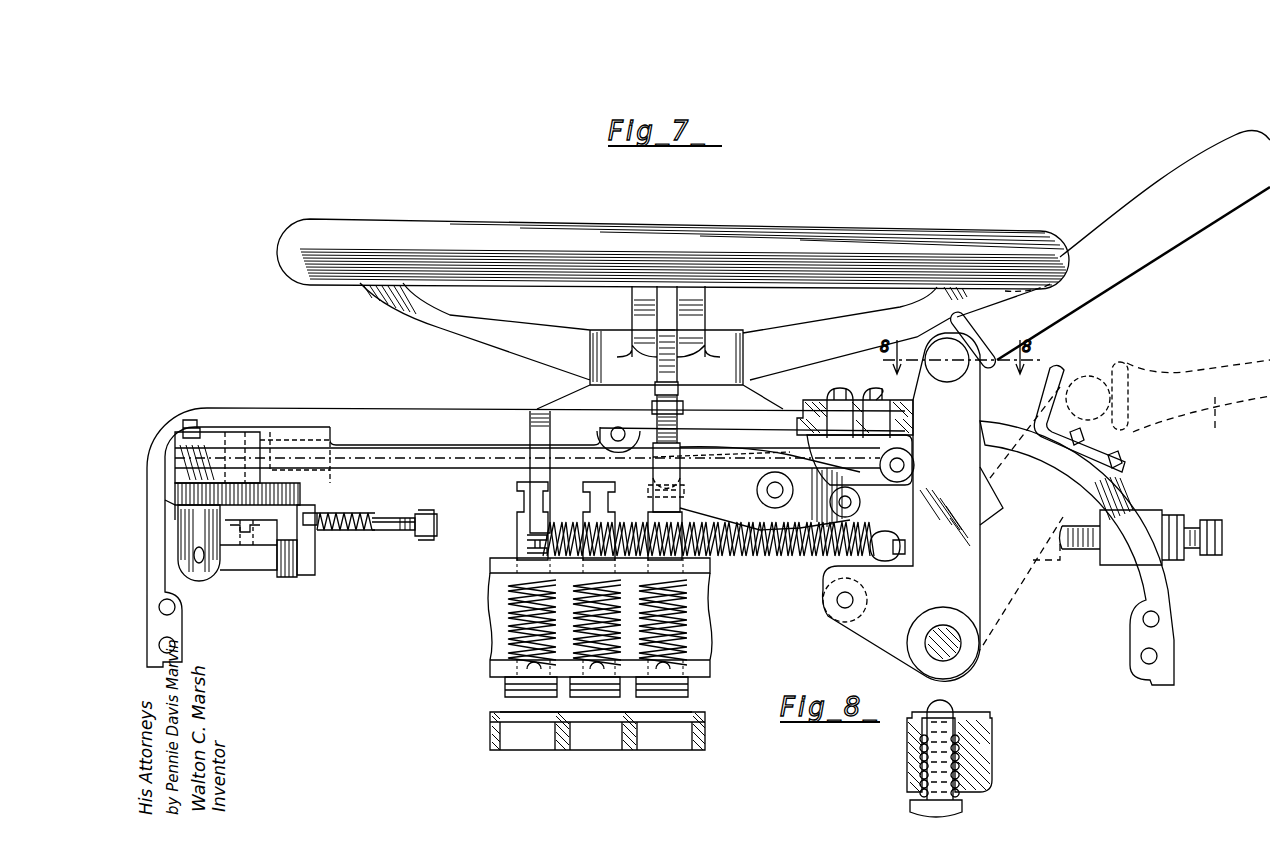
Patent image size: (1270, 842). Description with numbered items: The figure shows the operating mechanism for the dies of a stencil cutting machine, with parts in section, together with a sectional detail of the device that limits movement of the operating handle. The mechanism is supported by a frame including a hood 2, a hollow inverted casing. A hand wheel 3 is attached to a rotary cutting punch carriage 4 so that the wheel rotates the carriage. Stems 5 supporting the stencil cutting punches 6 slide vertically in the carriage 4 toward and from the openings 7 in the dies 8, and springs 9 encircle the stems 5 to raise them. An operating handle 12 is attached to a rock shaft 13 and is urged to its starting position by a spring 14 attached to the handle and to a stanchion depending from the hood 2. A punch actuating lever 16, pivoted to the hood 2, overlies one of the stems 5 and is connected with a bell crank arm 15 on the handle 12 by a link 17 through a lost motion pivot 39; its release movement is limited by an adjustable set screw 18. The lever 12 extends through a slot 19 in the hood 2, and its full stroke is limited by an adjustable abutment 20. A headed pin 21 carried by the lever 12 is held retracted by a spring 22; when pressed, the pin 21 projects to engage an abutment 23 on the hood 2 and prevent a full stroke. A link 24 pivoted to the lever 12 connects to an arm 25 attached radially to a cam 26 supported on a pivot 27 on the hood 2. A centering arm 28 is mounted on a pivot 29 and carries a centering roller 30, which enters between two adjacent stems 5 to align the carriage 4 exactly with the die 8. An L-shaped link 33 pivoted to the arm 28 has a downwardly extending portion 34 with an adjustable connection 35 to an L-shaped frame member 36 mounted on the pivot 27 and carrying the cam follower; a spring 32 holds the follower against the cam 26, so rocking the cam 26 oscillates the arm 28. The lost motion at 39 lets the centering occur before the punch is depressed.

In FIG. 7, the hood 2 is at (342, 410).
In FIG. 7, the hand wheel 3 is at (290, 240).
In FIG. 7, the rotary cutting punch carriage 4 is at (492, 566).
In FIG. 7, the stems 5 is at (519, 525).
In FIG. 7, the stencil cutting punches 6 is at (666, 695).
In FIG. 7, the openings 7 is at (662, 718).
In FIG. 7, the dies 8 is at (703, 733).
In FIG. 7, the springs 9 is at (505, 620).
In FIG. 7, the operating handle 12 is at (1090, 285).
In FIG. 8, the operating handle 12 is at (992, 752).
In FIG. 7, the rock shaft 13 is at (961, 645).
In FIG. 7, the spring 14 is at (786, 556).
In FIG. 7, the bell crank arm 15 is at (876, 628).
In FIG. 7, the punch actuating lever 16 is at (703, 455).
In FIG. 7, the link 17 is at (862, 569).
In FIG. 7, the adjustable set screw 18 is at (652, 385).
In FIG. 7, the slot 19 is at (1060, 462).
In FIG. 7, the adjustable abutment 20 is at (1084, 551).
In FIG. 7, the headed pin 21 is at (950, 375).
In FIG. 8, the headed pin 21 is at (950, 700).
In FIG. 8, the spring 22 is at (922, 792).
In FIG. 7, the abutment 23 is at (1062, 378).
In FIG. 7, the link 24 is at (478, 460).
In FIG. 7, the arm 25 is at (232, 460).
In FIG. 7, the cam 26 is at (302, 497).
In FIG. 7, the pivot 27 is at (248, 560).
In FIG. 7, the centering arm 28 is at (385, 530).
In FIG. 7, the pivot 29 is at (170, 515).
In FIG. 7, the centering roller 30 is at (438, 524).
In FIG. 7, the spring 32 is at (360, 513).
In FIG. 7, the L-shaped link 33 is at (320, 527).
In FIG. 7, the downwardly extending portion 34 is at (310, 565).
In FIG. 7, the adjustable connection 35 is at (280, 570).
In FIG. 7, the L-shaped frame member 36 is at (205, 578).
In FIG. 7, the lost motion pivot 39 is at (838, 600).